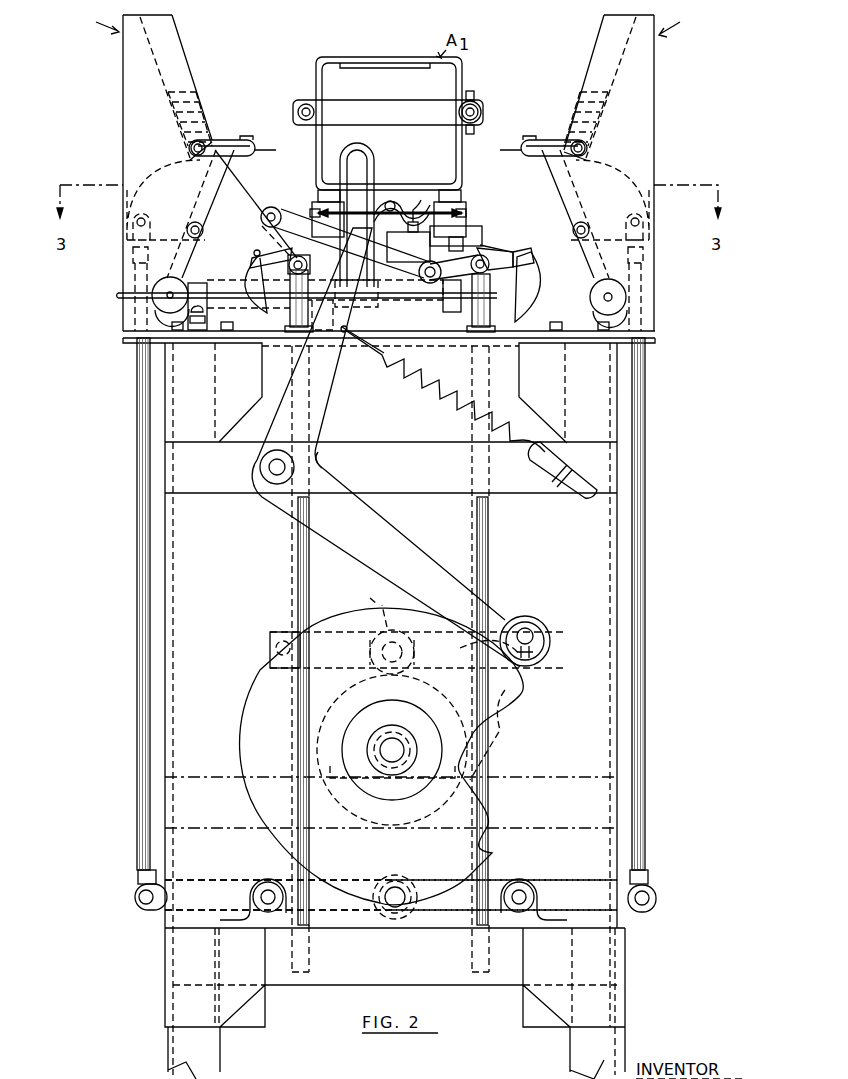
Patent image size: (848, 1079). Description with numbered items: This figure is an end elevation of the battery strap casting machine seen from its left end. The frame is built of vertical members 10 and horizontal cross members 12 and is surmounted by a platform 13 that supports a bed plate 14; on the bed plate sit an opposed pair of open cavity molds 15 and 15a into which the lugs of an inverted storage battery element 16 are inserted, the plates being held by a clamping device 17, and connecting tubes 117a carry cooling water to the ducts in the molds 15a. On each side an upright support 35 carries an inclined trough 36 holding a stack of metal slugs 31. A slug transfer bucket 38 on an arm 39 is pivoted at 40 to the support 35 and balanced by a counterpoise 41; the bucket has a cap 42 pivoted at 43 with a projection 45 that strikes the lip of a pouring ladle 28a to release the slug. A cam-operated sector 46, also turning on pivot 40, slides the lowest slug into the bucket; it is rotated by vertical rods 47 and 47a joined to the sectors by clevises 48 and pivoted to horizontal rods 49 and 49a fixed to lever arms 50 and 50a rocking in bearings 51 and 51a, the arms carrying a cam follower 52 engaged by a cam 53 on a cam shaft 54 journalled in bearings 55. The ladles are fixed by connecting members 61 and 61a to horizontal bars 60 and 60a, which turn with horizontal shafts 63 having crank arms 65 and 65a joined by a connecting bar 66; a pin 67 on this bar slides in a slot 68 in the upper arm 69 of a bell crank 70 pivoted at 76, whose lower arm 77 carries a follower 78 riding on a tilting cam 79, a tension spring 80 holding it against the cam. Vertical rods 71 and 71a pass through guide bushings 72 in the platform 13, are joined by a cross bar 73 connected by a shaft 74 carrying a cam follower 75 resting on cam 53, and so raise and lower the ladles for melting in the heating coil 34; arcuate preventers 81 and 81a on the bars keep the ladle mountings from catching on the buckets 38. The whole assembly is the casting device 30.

The vertical members 10 is at (172, 697).
The horizontal cross members 12 is at (400, 448).
The platform 13 is at (407, 340).
The bed plate 14 is at (430, 248).
The open cavity mold 15 is at (317, 200).
The open cavity mold 15a is at (466, 200).
The storage battery element 16 is at (378, 75).
The clamping device 17 is at (478, 100).
The pouring ladle 28a is at (481, 244).
The side frame assembly 30 is at (385, 22).
The metal slugs 31 is at (186, 92).
The high frequency heating coil 34 is at (290, 282).
The upright support 35 is at (123, 92).
The trough 36 is at (176, 50).
The slug transfer bucket 38 is at (224, 140).
The arm 39 is at (226, 170).
The pivot 40 is at (189, 228).
The counterpoise 41 is at (167, 283).
The cap 42 is at (248, 137).
The pivot 43 is at (202, 144).
The projection 45 is at (276, 150).
The cam-operated sector 46 is at (143, 174).
The vertical rod 47 is at (146, 572).
The vertical rod 47a is at (646, 560).
The clevises 48 is at (133, 260).
The horizontal rod 49 is at (139, 900).
The horizontal rod 49a is at (650, 900).
The lever arm 50 is at (250, 880).
The lever arm 50a is at (549, 882).
The bearing 51 is at (276, 880).
The bearing 51a is at (532, 880).
The cam follower 52 is at (396, 920).
The cam 53 is at (516, 690).
The cam shaft 54 is at (402, 744).
The bearings 55 is at (355, 766).
The horizontal bar 60 is at (258, 256).
The horizontal bar 60a is at (520, 255).
The connecting member 61 is at (246, 238).
The connecting member 61a is at (514, 250).
The horizontal shaft 63 is at (310, 265).
The crank arm 65 is at (266, 226).
The crank arm 65a is at (451, 312).
The connecting bar 66 is at (288, 211).
The pin 67 is at (405, 253).
The slot 68 is at (368, 162).
The upper arm 69 is at (332, 381).
The bell crank 70 is at (320, 464).
The vertical rod 71 is at (297, 552).
The vertical rod 71a is at (490, 550).
The guide bushings 72 is at (290, 325).
The cross bar 73 is at (276, 632).
The horizontal shaft 74 is at (370, 655).
The cam follower 75 is at (376, 600).
The pivot 76 is at (274, 480).
The lower arm 77 is at (428, 552).
The follower 78 is at (541, 628).
The tilting cam 79 is at (505, 726).
The tension spring 80 is at (450, 402).
The arcuate preventer 81 is at (248, 280).
The arcuate preventer 81a is at (530, 302).
The connecting tubes 117a is at (418, 198).